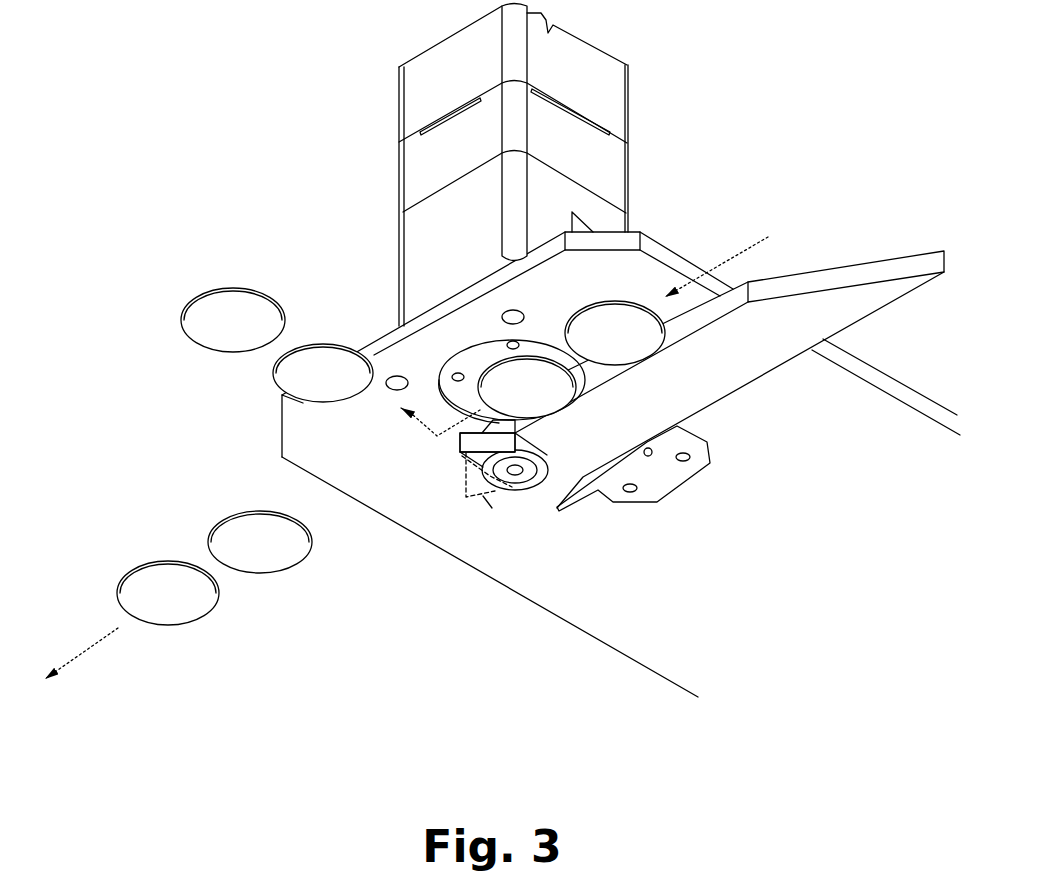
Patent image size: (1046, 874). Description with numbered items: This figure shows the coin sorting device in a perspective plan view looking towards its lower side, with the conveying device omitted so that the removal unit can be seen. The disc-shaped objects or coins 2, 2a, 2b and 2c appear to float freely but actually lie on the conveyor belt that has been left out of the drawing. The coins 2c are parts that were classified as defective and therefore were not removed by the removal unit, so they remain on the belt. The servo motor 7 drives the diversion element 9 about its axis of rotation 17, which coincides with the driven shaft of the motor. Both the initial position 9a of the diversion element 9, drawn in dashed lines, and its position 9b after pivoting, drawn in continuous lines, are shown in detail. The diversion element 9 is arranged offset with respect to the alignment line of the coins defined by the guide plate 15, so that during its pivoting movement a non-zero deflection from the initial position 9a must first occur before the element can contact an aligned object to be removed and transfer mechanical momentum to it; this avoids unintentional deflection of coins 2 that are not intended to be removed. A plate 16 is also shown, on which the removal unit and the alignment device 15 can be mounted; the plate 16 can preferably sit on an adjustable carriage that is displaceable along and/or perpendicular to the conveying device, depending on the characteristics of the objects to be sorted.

The disc-shaped objects 2 is at (606, 349).
The disc-shaped object 2a is at (538, 400).
The disc-shaped objects 2b is at (277, 383).
The disc-shaped objects classified as defective 2c is at (220, 608).
The servo motor 7 is at (627, 146).
The diversion element 9 is at (458, 455).
The position of the diversion element after pivoting 9b is at (455, 518).
The initial position of the diversion element 9a is at (483, 496).
The alignment device 15 is at (703, 377).
The plate 16 is at (819, 574).
The axis of rotation of the diversion element 17 is at (514, 474).